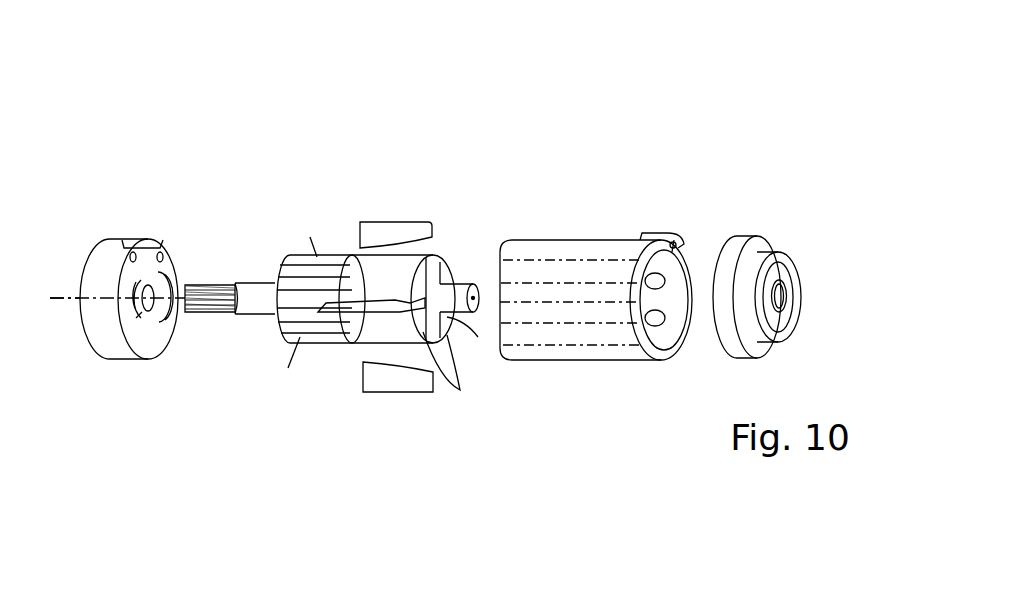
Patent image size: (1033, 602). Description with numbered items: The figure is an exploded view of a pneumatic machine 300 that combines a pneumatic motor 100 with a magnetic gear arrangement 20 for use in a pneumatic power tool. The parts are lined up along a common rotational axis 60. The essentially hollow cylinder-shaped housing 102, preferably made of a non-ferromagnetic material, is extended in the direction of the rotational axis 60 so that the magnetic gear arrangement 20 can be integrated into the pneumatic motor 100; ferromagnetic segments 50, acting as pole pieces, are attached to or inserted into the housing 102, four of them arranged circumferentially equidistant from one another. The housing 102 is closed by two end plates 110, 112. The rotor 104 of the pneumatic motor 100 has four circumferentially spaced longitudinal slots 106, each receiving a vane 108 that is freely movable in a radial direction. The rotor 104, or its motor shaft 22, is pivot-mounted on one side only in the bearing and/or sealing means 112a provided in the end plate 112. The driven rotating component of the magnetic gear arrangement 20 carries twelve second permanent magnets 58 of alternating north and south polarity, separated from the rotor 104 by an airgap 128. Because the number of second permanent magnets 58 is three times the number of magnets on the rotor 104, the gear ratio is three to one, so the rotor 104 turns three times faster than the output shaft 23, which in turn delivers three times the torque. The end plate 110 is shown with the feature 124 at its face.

The pneumatic machine 300 is at (476, 96).
The pneumatic motor 100 is at (545, 160).
The magnetic gear arrangement 20 is at (283, 208).
The end plate 110 is at (107, 260).
The bearing slot in end cap 124 is at (140, 318).
The rotational axis 60 is at (70, 292).
The output shaft 23 is at (220, 288).
The second permanent magnets 58 is at (285, 277).
The rotor 104 is at (367, 275).
The airgap 128 is at (352, 258).
The vane 108 is at (415, 228).
The longitudinal slots 106 is at (447, 267).
The motor shaft 22 is at (455, 293).
The housing 102 is at (603, 312).
The ferromagnetic segments 50 is at (543, 290).
The end plate 112 is at (752, 243).
The bearing and/or sealing means 112a is at (782, 297).